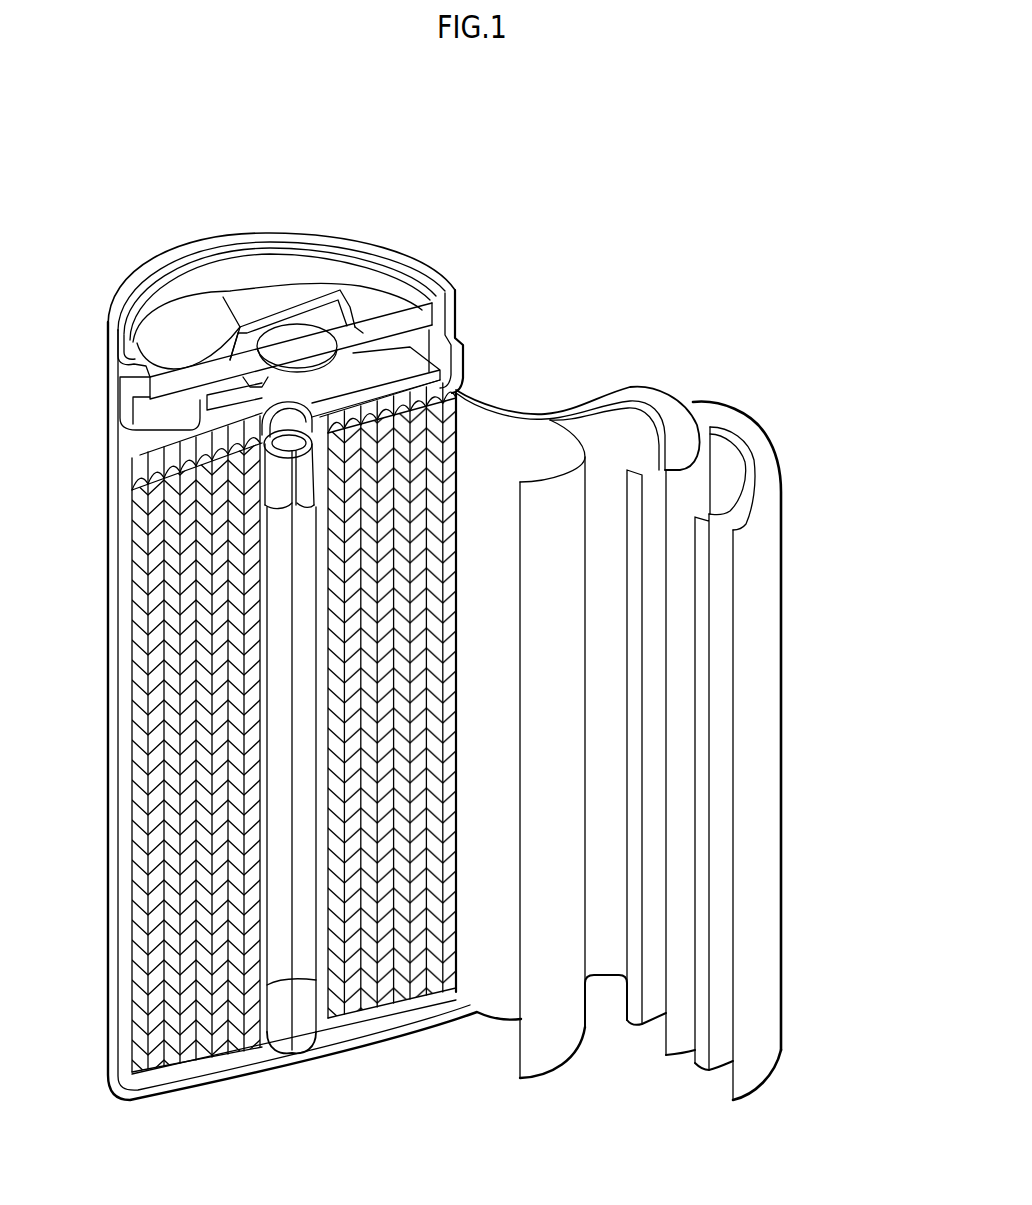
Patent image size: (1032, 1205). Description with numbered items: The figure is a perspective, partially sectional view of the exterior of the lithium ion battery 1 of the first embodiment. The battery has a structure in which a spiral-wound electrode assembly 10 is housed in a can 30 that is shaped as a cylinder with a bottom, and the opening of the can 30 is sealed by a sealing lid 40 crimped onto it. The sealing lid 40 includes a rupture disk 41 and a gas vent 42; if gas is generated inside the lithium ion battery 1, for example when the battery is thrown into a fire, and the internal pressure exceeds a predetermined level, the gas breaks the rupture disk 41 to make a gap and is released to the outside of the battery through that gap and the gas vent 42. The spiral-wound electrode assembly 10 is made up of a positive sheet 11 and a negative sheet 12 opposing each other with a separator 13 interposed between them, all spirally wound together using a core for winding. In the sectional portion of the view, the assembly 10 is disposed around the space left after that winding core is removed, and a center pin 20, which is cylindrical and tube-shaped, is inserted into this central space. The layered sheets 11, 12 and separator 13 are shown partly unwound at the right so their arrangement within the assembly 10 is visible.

The lithium ion battery 1 is at (540, 184).
The spiral-wound electrode assembly 10 is at (862, 573).
The positive sheet 11 is at (640, 677).
The negative sheet 12 is at (700, 633).
The separator 13 is at (677, 575).
The center pin 20 is at (292, 1055).
The can 30 is at (122, 862).
The sealing lid 40 is at (254, 290).
The rupture disk 41 is at (288, 347).
The gas vent 42 is at (360, 312).